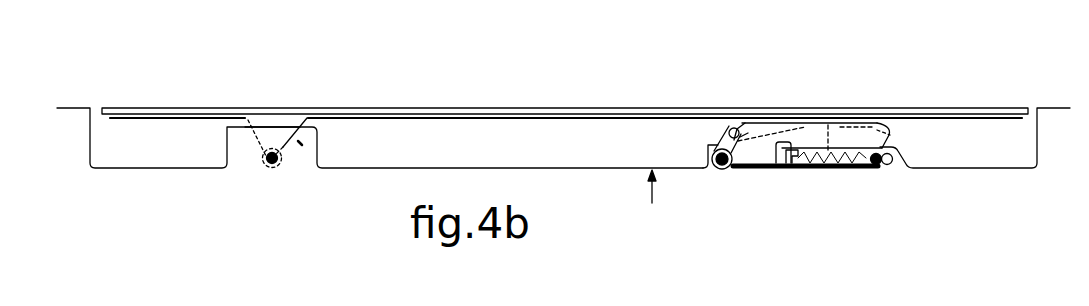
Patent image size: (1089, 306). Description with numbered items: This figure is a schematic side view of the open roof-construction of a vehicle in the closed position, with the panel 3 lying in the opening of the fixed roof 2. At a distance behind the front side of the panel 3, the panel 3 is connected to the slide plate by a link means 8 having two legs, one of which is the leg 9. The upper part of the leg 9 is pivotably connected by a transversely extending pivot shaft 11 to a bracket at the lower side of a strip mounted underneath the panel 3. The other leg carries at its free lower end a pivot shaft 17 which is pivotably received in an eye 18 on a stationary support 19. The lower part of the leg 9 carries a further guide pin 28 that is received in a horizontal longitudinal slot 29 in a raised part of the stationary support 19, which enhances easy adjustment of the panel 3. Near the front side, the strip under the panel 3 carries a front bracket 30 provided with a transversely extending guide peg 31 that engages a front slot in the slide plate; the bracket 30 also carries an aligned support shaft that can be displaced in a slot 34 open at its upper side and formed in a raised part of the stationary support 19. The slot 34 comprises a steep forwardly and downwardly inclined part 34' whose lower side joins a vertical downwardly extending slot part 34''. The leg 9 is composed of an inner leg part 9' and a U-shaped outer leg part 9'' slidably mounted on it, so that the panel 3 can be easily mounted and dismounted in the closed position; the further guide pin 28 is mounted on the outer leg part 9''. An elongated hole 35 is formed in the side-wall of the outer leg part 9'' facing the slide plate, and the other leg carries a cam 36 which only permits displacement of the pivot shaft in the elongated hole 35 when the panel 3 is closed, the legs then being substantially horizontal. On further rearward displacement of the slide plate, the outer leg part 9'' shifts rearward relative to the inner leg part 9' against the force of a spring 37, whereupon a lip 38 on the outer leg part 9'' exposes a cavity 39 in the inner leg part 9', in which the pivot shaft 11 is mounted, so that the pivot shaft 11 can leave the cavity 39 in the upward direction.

The fixed roof 2 is at (72, 107).
The panel 3 is at (437, 109).
The link means 8 is at (835, 122).
The leg 9 is at (807, 110).
The inner leg part 9' is at (697, 95).
The outer leg part 9'' is at (878, 98).
The pivot shaft 11 is at (735, 128).
The pivot shaft 17 is at (723, 168).
The eye 18 is at (716, 168).
The stationary support 19 is at (657, 200).
The further guide pin 28 is at (878, 166).
The horizontal longitudinal slot 29 is at (890, 164).
The front bracket 30 is at (262, 122).
The guide peg 31 is at (274, 153).
The slot 34 is at (319, 174).
The inclined slot part 34' is at (295, 188).
The vertical slot part 34'' is at (247, 175).
The elongated hole 35 is at (778, 167).
The cam 36 is at (792, 163).
The spring 37 is at (847, 165).
The lip 38 is at (743, 135).
The cavity 39 is at (725, 138).